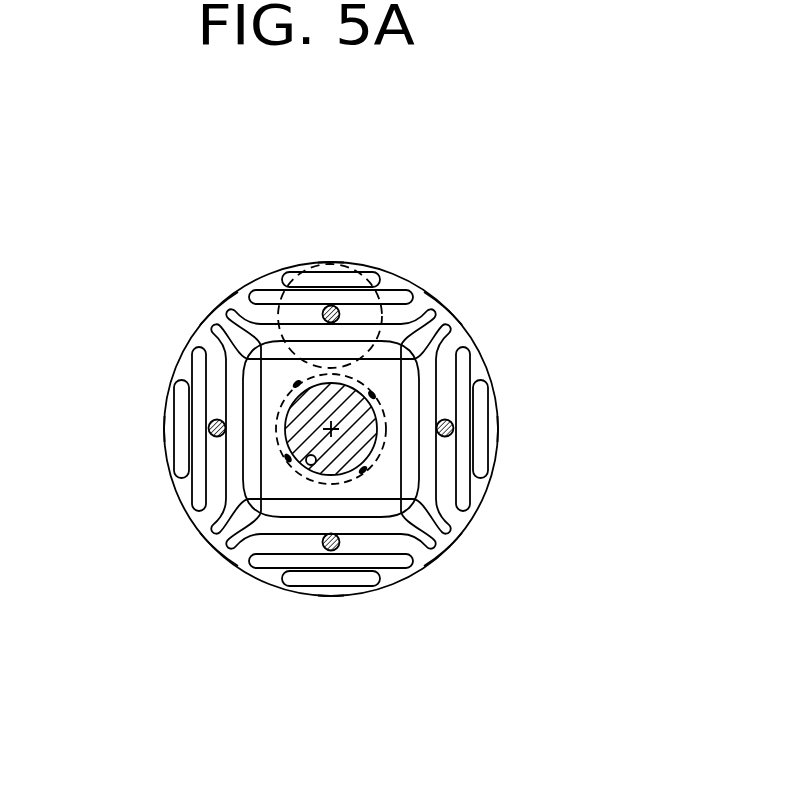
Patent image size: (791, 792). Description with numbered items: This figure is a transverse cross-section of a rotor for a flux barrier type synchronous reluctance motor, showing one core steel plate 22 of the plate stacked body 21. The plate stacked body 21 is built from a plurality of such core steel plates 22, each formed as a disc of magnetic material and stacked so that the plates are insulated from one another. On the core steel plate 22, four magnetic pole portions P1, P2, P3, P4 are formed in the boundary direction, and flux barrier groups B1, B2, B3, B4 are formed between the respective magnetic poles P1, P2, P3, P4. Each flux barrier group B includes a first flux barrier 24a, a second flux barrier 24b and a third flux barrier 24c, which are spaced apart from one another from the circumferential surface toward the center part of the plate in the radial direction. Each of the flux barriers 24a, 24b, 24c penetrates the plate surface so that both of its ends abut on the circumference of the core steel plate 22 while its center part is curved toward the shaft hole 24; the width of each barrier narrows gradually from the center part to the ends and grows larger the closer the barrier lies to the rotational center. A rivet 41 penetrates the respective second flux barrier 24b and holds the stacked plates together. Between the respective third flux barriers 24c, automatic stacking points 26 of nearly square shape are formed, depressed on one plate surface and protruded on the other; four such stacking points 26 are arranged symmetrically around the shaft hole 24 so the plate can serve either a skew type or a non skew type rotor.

The plate stacked body 21 is at (256, 242).
The core steel plate 22 is at (230, 277).
The shaft hole 24 is at (311, 465).
The first flux barrier 24a is at (178, 378).
The second flux barrier 24b is at (193, 347).
The third flux barrier 24c is at (215, 311).
The automatic stacking point 26 is at (296, 386).
The rivet 41 is at (453, 412).
The flux barrier group B is at (354, 265).
The first flux barrier group B1 is at (331, 256).
The second flux barrier group B2 is at (156, 428).
The third flux barrier group B3 is at (332, 599).
The fourth flux barrier group B4 is at (504, 428).
The first magnetic pole portion P1 is at (445, 308).
The second magnetic pole portion P2 is at (223, 322).
The third magnetic pole portion P3 is at (210, 545).
The fourth magnetic pole portion P4 is at (449, 541).